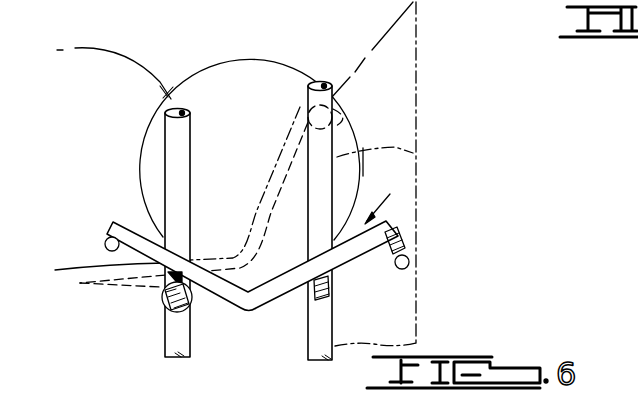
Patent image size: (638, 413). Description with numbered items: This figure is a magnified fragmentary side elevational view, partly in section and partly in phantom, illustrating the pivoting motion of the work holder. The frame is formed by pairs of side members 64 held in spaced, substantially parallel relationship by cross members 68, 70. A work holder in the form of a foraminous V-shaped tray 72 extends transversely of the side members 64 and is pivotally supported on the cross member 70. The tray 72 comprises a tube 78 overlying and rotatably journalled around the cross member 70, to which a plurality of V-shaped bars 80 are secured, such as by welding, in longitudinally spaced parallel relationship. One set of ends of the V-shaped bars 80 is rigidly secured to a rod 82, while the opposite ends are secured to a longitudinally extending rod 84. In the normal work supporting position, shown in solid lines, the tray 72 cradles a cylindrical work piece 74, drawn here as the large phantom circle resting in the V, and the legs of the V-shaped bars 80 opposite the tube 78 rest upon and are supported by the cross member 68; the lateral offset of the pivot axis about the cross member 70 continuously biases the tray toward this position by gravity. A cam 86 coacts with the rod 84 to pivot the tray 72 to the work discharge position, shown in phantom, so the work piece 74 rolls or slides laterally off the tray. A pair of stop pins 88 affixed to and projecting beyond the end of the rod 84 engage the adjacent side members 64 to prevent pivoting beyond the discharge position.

The side members 64 is at (175, 343).
The cross member 68 is at (330, 293).
The cross member 70 is at (165, 308).
The work supporting tray 72 is at (294, 175).
The log 74 is at (140, 68).
The tube 78 is at (165, 299).
The V-shaped bars 80 is at (237, 305).
The rod 82 is at (104, 243).
The rod 84 is at (407, 242).
The cam 86 is at (412, 75).
The stop pins 88 is at (334, 118).